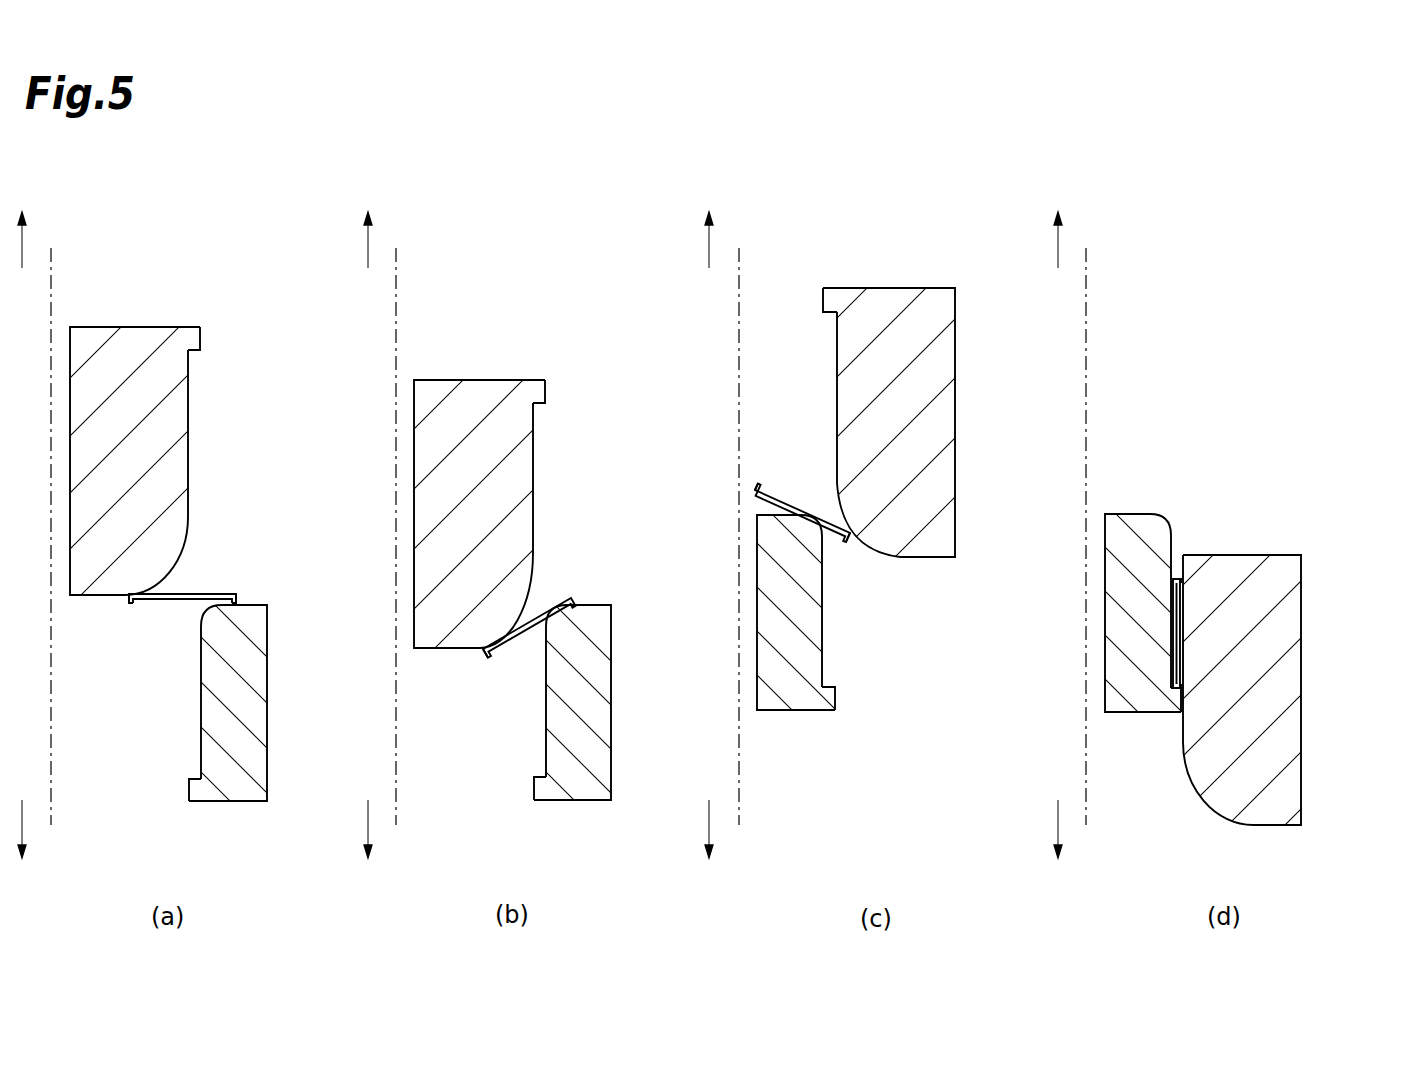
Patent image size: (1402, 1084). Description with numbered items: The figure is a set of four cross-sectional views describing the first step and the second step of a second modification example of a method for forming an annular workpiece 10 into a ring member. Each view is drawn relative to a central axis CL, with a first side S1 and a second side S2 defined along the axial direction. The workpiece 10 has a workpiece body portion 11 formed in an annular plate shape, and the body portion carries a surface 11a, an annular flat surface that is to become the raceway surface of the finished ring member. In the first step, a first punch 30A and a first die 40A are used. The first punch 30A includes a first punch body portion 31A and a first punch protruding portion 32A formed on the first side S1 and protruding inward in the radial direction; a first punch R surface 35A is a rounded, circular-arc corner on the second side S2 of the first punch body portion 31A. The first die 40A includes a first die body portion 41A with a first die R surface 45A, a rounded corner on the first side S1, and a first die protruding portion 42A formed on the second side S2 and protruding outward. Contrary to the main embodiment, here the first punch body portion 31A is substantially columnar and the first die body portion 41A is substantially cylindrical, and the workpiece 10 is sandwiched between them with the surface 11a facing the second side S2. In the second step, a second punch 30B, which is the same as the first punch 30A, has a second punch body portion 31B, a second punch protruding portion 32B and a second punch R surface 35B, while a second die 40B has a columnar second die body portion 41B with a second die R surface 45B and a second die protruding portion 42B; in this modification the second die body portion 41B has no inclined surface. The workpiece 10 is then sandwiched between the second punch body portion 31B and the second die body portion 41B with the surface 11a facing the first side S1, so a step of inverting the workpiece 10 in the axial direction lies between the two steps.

The workpiece 10 is at (242, 597).
The workpiece body portion 11 is at (727, 547).
The surface 11a is at (132, 605).
The first punch 30A is at (441, 550).
The first punch body portion 31A is at (165, 428).
The first punch protruding portion 32A is at (203, 340).
The first punch R surface 35A is at (187, 560).
The first die 40A is at (425, 600).
The first die body portion 41A is at (218, 708).
The first die protruding portion 42A is at (193, 790).
The first die R surface 45A is at (201, 612).
The second punch 30B is at (828, 550).
The second punch body portion 31B is at (935, 404).
The second punch protruding portion 32B is at (830, 289).
The second punch R surface 35B is at (873, 548).
The second die 40B is at (892, 600).
The second die body portion 41B is at (810, 632).
The second die protruding portion 42B is at (830, 697).
The second die R surface 45B is at (815, 535).
The first side S1 is at (23, 247).
The second side S2 is at (22, 828).
The central axis CL is at (51, 265).